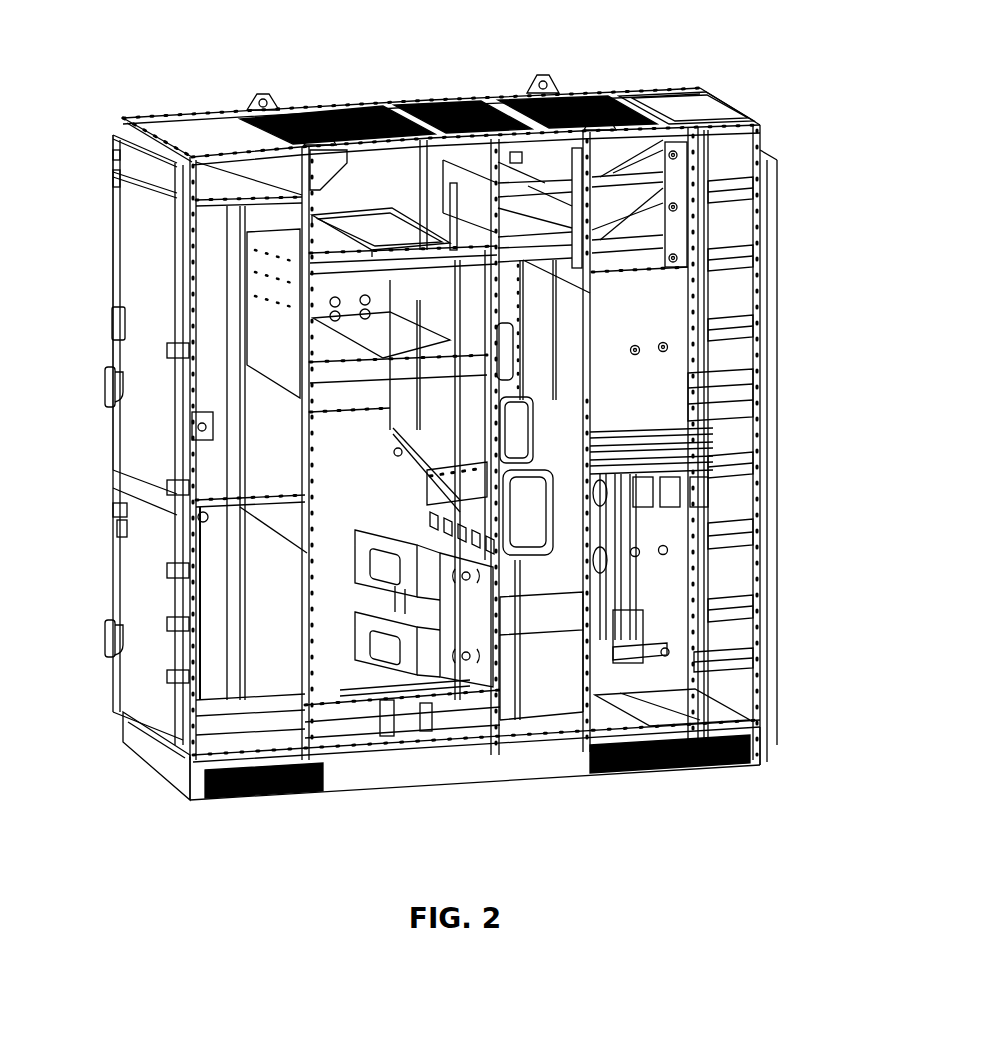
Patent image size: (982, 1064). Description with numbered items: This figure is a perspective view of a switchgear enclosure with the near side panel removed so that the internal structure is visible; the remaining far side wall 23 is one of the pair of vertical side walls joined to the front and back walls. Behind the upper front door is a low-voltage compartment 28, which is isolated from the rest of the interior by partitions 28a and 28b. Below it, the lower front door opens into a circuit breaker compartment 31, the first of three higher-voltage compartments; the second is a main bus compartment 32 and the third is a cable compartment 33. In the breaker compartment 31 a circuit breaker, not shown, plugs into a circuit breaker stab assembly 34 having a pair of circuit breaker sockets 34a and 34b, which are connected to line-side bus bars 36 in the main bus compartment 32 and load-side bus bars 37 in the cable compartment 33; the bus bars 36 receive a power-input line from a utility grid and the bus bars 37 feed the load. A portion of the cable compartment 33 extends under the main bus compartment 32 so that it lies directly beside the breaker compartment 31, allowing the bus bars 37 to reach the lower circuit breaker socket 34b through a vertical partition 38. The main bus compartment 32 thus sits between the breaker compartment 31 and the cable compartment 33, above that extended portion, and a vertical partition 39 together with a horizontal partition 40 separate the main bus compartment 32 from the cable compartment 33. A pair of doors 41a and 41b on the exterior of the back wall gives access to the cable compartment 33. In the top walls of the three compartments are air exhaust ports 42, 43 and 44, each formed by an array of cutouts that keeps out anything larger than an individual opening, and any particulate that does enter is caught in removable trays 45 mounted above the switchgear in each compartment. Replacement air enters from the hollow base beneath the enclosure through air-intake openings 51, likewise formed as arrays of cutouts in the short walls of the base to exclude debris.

The side wall 23 is at (337, 474).
The low-voltage compartment 28 is at (202, 315).
The partition 28a is at (303, 442).
The partition 28b is at (255, 523).
The circuit breaker compartment 31 is at (353, 677).
The main bus compartment 32 is at (487, 273).
The cable compartment 33 is at (667, 677).
The circuit breaker stab assembly 34 is at (263, 622).
The circuit breaker socket 34a is at (367, 560).
The circuit breaker socket 34b is at (370, 640).
The line-side bus bars 36 is at (690, 444).
The load-side bus bars 37 is at (630, 530).
The vertical partition 38 is at (450, 500).
The vertical partition 39 is at (590, 340).
The horizontal partition 40 is at (572, 572).
The door 41a is at (778, 228).
The door 41b is at (787, 688).
The air exhaust port 42 is at (330, 110).
The air exhaust port 43 is at (460, 102).
The air exhaust port 44 is at (600, 105).
The removable trays 45 is at (367, 230).
The air-intake openings 51 is at (157, 780).